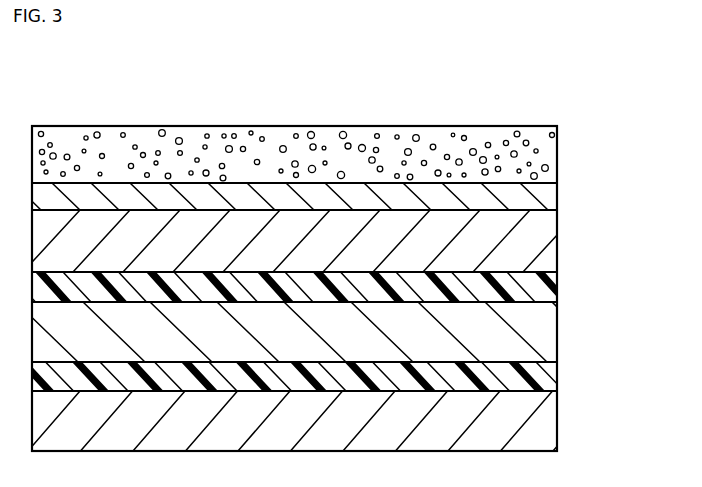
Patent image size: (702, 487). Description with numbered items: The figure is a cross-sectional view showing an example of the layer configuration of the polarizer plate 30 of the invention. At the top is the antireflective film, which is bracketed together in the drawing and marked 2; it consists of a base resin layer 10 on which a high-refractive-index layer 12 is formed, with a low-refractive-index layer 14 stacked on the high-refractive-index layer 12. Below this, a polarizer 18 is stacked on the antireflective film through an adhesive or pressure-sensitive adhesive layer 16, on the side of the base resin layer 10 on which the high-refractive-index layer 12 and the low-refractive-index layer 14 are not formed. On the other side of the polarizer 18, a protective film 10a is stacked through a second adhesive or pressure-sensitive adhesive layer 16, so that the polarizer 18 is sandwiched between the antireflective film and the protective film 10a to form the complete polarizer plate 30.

The polarizer plate 30 is at (462, 117).
The substrate 2 is at (328, 199).
The low-refractive-index layer 14 is at (547, 157).
The high-refractive-index layer 12 is at (547, 195).
The base resin layer 10 is at (316, 241).
The adhesive or pressure-sensitive adhesive layer 16 is at (547, 287).
The polarizer 18 is at (547, 329).
The protective film 10a is at (547, 421).